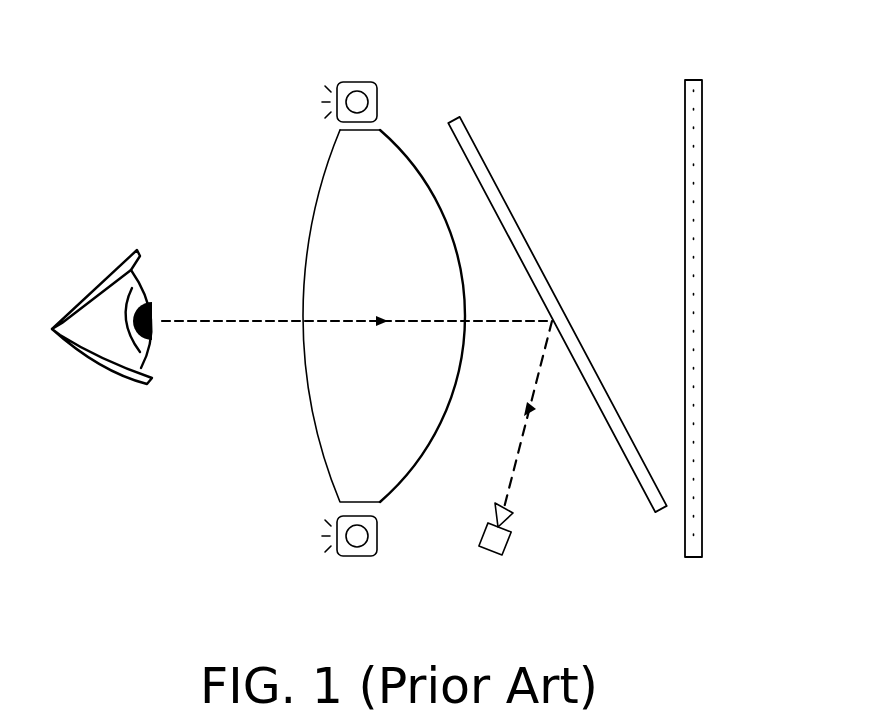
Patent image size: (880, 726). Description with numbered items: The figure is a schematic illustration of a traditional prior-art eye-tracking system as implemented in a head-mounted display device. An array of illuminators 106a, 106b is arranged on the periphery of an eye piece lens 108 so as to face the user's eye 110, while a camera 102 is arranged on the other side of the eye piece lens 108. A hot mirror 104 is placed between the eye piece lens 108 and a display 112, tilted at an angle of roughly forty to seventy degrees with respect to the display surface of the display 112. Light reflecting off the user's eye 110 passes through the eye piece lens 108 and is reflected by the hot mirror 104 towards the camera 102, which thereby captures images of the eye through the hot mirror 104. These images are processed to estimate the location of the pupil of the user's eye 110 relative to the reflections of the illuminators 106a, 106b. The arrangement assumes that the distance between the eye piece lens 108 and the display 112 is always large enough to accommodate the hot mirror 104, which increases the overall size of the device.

The camera 102 is at (490, 567).
The hot mirror 104 is at (557, 256).
The illuminator 106a is at (356, 61).
The illuminator 106b is at (357, 573).
The eye piece lens 108 is at (322, 314).
The user's eye 110 is at (86, 369).
The display 112 is at (756, 318).